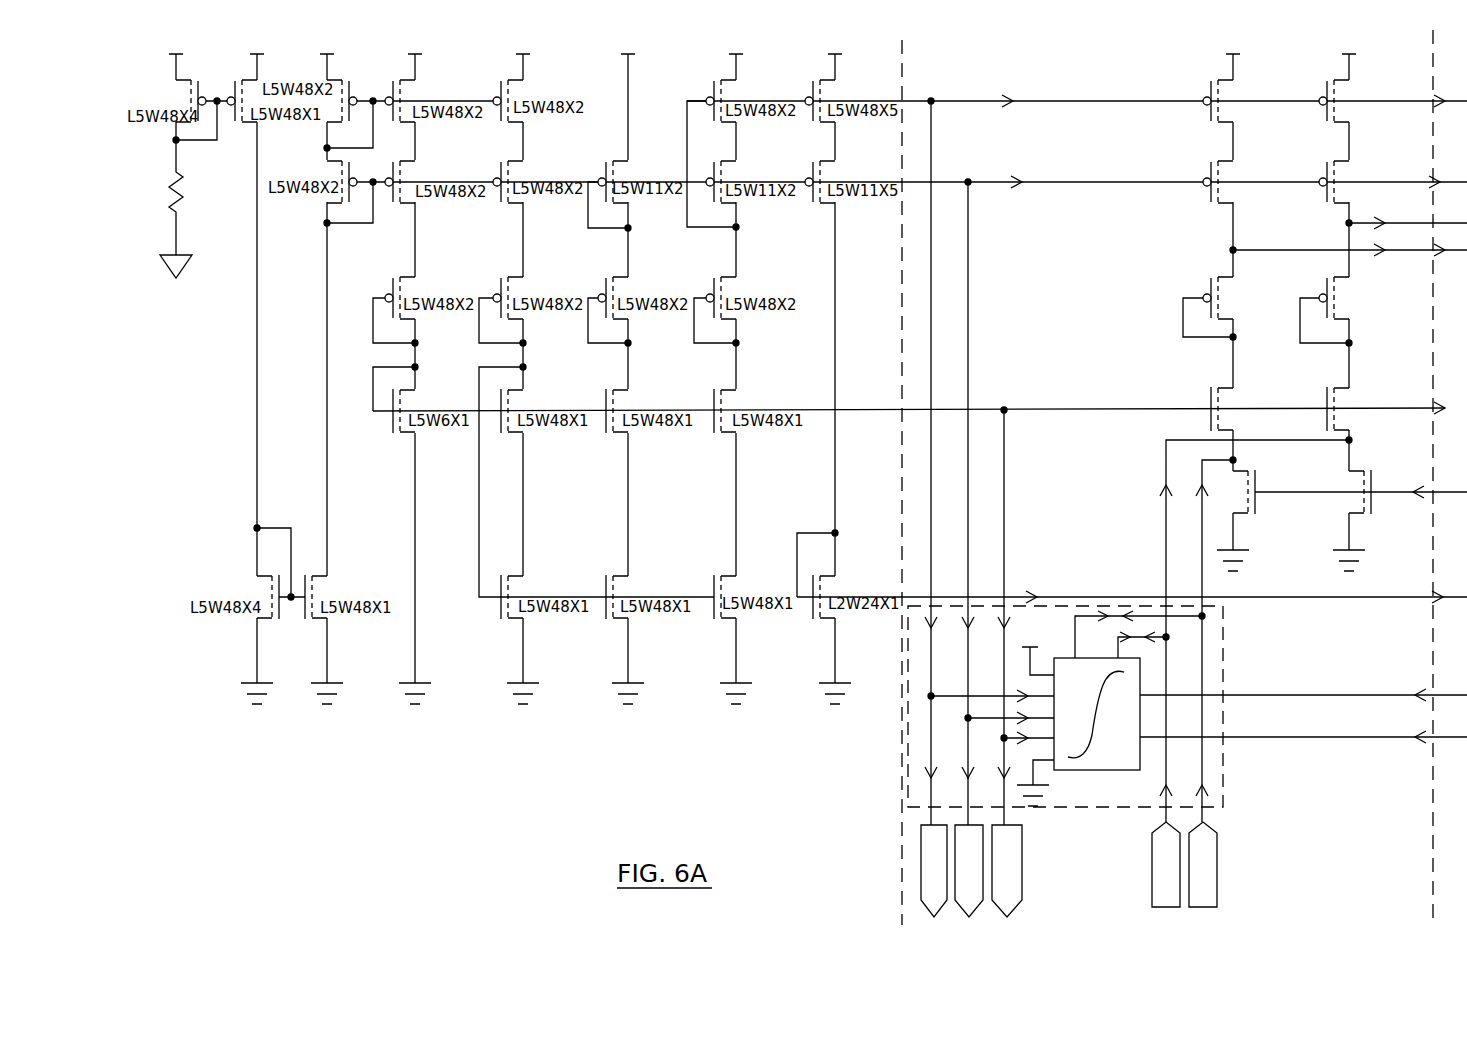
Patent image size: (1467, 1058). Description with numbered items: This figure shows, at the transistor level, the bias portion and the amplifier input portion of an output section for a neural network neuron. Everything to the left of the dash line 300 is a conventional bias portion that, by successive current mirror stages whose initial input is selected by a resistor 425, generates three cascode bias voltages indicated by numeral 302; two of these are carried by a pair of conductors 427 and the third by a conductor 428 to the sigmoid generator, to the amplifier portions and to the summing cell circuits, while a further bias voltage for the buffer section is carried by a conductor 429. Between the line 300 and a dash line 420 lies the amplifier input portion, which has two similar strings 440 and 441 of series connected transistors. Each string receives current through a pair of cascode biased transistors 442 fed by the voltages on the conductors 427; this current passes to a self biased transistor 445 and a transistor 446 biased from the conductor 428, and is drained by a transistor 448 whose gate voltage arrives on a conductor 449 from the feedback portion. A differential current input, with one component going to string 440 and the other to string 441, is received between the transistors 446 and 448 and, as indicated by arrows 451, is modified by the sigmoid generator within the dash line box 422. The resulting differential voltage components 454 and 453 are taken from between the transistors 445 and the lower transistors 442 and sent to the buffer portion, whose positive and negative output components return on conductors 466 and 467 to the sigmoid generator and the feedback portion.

The dash line 300 is at (904, 62).
The bias voltages BV1, BV2 and BV3 302 is at (1025, 857).
The dash line 420 is at (1428, 67).
The dash line box 422 is at (1226, 760).
The resistor 425 is at (185, 207).
The pair of conductors 427 is at (898, 179).
The conductor 428 is at (905, 410).
The conductor 429 is at (890, 596).
The string of series connected transistors 440 is at (1345, 572).
The string of series connected transistors 441 is at (1238, 576).
The cascode biased transistors 442 is at (1327, 165).
The self biased transistor 445 is at (1327, 283).
The transistor 446 is at (1327, 398).
The transistor 448 is at (1368, 482).
The conductor 449 is at (1414, 490).
The arrows 451 is at (1135, 580).
The differential voltage signal component 453 is at (1410, 222).
The differential voltage signal component 454 is at (1415, 252).
The conductor 466 is at (1390, 736).
The conductor 467 is at (1388, 694).